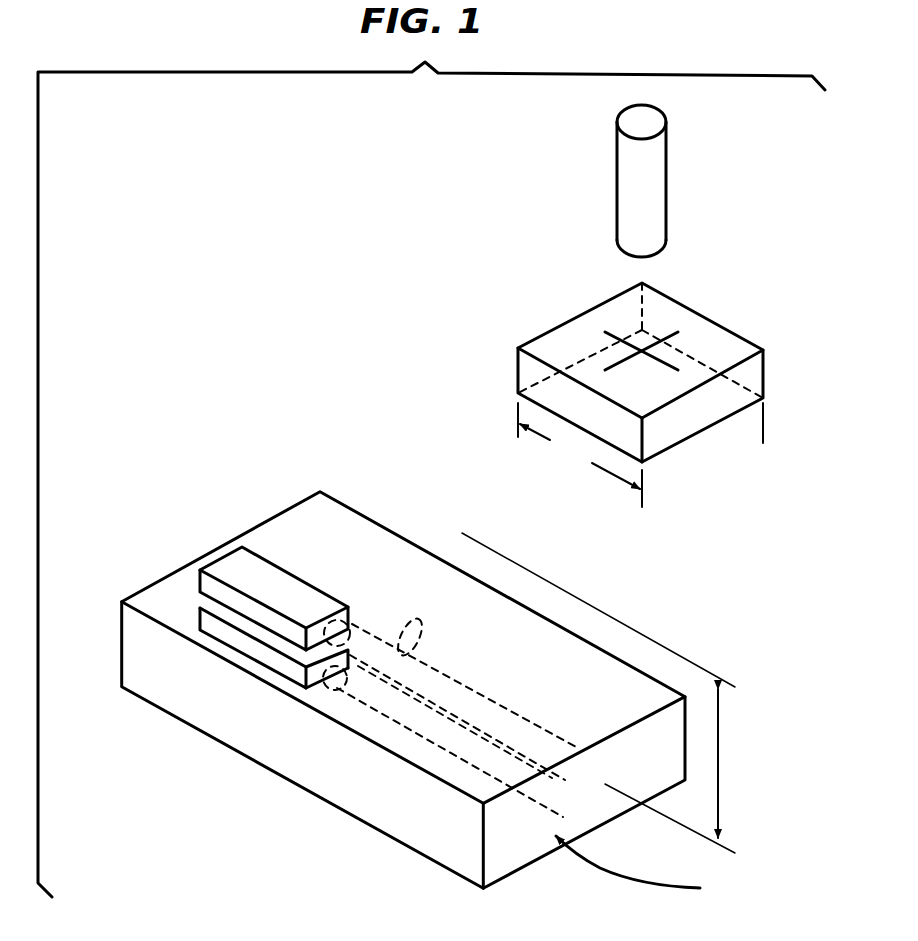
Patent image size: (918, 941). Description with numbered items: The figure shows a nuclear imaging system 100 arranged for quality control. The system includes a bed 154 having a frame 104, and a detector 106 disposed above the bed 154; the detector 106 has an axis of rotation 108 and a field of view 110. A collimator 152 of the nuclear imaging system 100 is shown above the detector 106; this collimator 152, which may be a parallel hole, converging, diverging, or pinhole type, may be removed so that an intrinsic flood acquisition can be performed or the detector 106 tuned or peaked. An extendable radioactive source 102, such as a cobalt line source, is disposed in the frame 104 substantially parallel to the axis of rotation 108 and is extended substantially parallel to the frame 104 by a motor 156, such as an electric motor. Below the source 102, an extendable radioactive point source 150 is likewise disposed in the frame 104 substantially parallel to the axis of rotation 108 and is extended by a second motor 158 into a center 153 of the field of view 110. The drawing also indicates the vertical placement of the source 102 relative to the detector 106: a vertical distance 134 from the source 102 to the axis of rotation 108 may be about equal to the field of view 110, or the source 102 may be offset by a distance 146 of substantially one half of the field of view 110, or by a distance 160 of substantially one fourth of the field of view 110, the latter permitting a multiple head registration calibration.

The nuclear imaging system 100 is at (766, 573).
The extendable radioactive source 102 is at (597, 770).
The frame 104 is at (180, 705).
The detector 106 is at (722, 342).
The axis of rotation 108 is at (614, 693).
The field of view 110 is at (580, 455).
The vertical distance 134 is at (763, 763).
The distance 146 is at (763, 763).
The distance 160 is at (763, 763).
The extendable radioactive point source 150 is at (647, 872).
The collimator 152 is at (666, 187).
The center 153 is at (597, 566).
The bed 154 is at (320, 550).
The motor 156 is at (428, 636).
The motor 158 is at (307, 690).